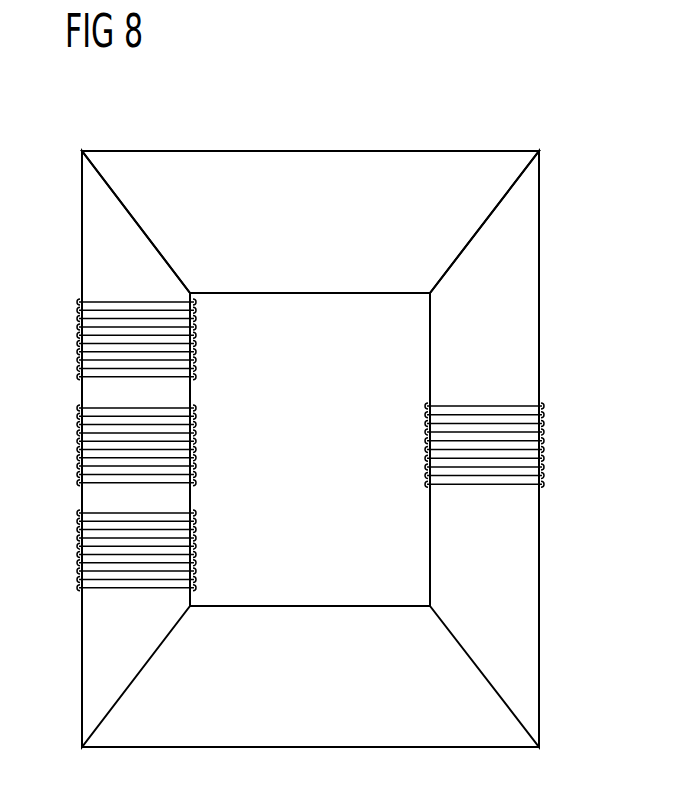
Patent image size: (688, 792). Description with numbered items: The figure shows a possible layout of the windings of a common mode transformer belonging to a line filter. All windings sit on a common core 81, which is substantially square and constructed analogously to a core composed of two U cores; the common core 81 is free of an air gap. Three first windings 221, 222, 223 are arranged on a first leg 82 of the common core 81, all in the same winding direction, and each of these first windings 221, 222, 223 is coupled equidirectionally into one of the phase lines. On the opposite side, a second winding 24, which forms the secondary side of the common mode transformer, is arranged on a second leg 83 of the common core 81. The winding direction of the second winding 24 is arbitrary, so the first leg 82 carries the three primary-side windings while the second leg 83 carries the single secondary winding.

The common core 81 is at (422, 150).
The first leg 82 is at (95, 215).
The second leg 83 is at (540, 257).
The first winding 221 is at (194, 363).
The first winding 222 is at (194, 473).
The first winding 223 is at (194, 578).
The second winding 24 is at (542, 439).